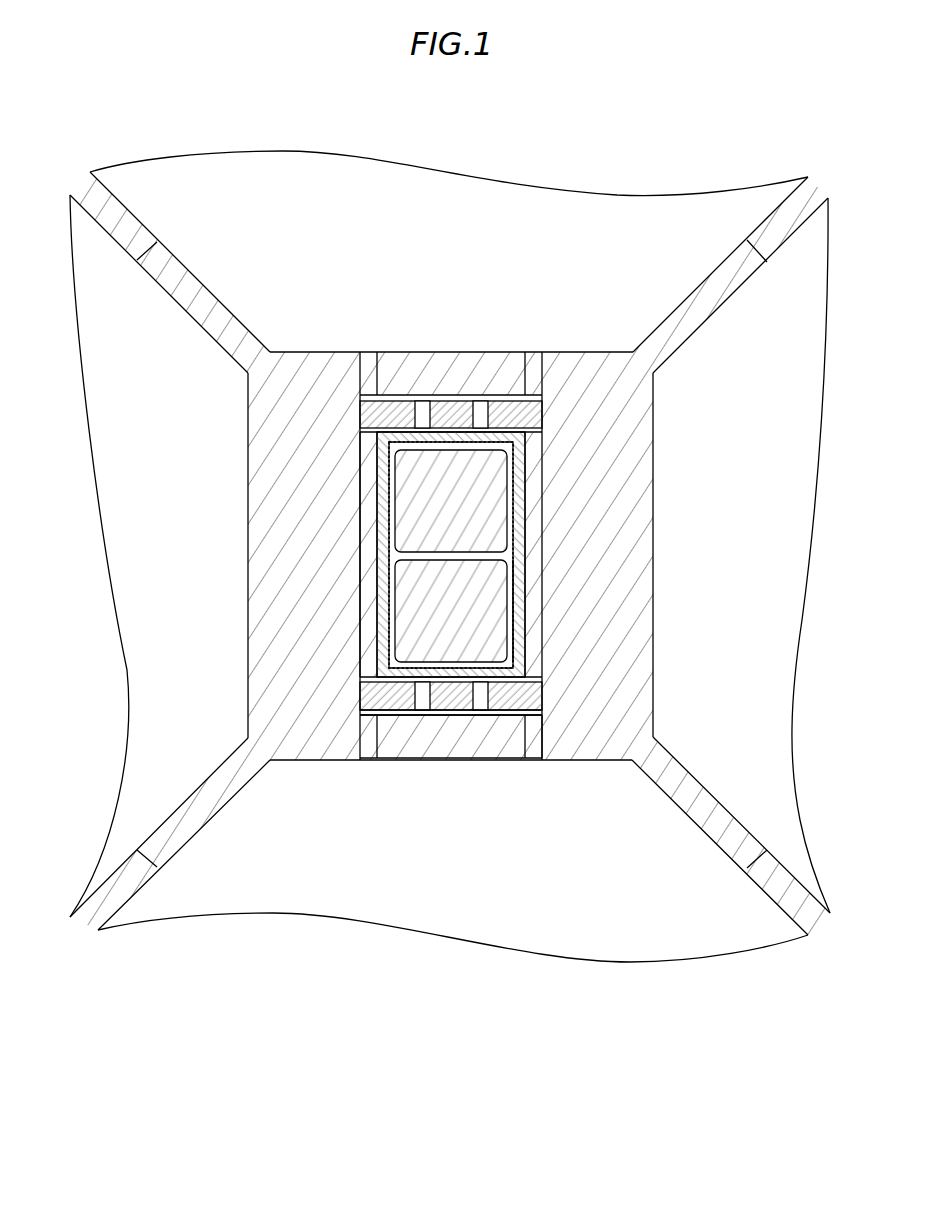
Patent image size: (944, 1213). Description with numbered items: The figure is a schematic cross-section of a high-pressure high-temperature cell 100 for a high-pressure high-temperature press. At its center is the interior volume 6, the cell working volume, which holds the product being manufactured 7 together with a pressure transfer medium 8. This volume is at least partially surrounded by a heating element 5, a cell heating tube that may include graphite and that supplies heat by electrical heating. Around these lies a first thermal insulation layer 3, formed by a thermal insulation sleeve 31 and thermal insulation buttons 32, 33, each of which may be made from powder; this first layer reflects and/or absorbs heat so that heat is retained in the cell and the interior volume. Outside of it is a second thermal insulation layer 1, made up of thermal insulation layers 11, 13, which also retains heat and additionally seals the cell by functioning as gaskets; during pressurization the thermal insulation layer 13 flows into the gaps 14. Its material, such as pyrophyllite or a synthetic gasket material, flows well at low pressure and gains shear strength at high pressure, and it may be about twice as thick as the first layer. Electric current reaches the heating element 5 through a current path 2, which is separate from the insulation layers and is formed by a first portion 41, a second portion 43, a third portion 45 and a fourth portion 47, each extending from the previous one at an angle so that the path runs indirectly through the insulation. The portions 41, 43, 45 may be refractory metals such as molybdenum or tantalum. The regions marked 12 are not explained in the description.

The high-pressure high-temperature cell 100 is at (622, 997).
The second thermal insulation layer 1 is at (623, 569).
The thermal insulation layer 11 is at (480, 387).
The thermal insulation layer 13 is at (185, 270).
The gaps 14 is at (92, 196).
The sheet 12 is at (469, 283).
The current path 2 is at (538, 350).
The first thermal insulation layer 3 is at (73, 637).
The thermal insulation sleeve 31 is at (375, 631).
The thermal insulation button 32 is at (520, 690).
The thermal insulation button 33 is at (370, 703).
The heating element 5 is at (383, 498).
The interior volume 6 is at (512, 580).
The product being manufactured 7 is at (450, 606).
The pressure transfer medium 8 is at (388, 463).
The first portion 41 is at (372, 686).
The second portion 43 is at (422, 708).
The third portion 45 is at (367, 708).
The fourth portion 47 is at (533, 745).